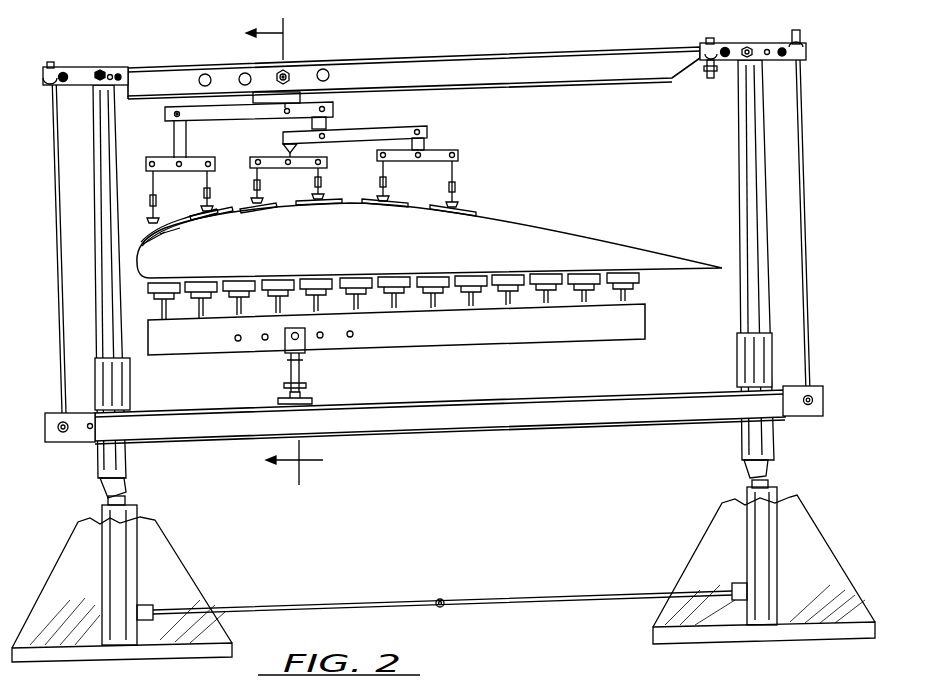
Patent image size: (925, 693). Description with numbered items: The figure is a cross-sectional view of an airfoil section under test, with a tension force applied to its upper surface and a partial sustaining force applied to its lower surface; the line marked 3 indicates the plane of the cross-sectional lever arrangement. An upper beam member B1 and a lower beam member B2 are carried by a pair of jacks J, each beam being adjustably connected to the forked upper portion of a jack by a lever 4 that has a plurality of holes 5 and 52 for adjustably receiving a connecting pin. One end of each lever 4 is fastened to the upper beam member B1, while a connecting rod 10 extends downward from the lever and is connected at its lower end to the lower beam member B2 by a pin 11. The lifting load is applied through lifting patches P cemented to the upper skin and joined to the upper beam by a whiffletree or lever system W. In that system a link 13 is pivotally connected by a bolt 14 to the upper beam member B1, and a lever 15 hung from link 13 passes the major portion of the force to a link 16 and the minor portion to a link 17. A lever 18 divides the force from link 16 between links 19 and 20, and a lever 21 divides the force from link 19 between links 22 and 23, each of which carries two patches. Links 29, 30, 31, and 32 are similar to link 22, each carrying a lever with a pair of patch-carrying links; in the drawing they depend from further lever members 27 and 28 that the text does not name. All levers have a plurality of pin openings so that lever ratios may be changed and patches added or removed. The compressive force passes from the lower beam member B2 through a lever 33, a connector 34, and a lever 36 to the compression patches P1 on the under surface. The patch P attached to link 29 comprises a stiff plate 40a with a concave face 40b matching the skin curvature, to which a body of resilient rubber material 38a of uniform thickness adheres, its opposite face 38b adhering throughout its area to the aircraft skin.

The tail portion 3 is at (284, 246).
The lever 4 is at (100, 70).
The hole 5 is at (80, 73).
The hole 52 is at (120, 71).
The connecting rod 10 is at (52, 157).
The pin 11 is at (66, 441).
The link 13 is at (258, 92).
The bolt 14 is at (290, 70).
The lever 15 is at (226, 112).
The link 16 is at (328, 124).
The link 17 is at (178, 132).
The lever 18 is at (400, 130).
The link 19 is at (325, 151).
The link 20 is at (425, 147).
The lever 21 is at (272, 160).
The link 22 is at (257, 178).
The link 23 is at (318, 180).
The equalizer bar 27 is at (160, 160).
The equalizer bar 28 is at (448, 168).
The link 29 is at (152, 186).
The link 30 is at (205, 186).
The link 31 is at (386, 178).
The link 32 is at (458, 178).
The lever 33 is at (302, 362).
The connector 34 is at (284, 350).
The lever 36 is at (158, 316).
The body of resilient rubber material 38a is at (144, 244).
The opposite face 38b is at (183, 226).
The stiff plate 40a is at (152, 238).
The concave face 40b is at (168, 234).
The upper beam member B1 is at (514, 54).
The lower beam member B2 is at (409, 430).
The jack J is at (91, 107).
The lifting patch P is at (166, 216).
The compression patch P1 is at (649, 282).
The whiffletree or lever system W is at (336, 108).